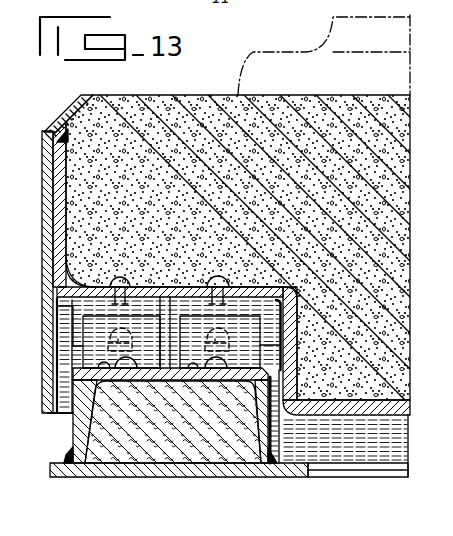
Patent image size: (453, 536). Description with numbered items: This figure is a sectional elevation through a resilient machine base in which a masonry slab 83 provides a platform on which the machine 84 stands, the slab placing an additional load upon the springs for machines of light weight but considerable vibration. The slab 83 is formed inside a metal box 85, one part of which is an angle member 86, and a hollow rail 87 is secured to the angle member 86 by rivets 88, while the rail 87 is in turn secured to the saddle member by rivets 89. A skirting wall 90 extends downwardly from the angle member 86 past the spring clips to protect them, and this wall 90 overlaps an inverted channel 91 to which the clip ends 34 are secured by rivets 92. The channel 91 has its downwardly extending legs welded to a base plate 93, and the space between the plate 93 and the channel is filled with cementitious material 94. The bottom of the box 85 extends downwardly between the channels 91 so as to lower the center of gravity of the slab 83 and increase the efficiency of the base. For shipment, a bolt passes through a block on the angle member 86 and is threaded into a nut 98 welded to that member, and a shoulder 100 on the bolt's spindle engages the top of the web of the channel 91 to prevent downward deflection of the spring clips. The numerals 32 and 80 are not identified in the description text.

The masonry slab 83 is at (200, 108).
The machine 84 is at (284, 58).
The metal box 85 is at (408, 414).
The angle member 86 is at (52, 281).
The hollow rail 87 is at (80, 322).
The rivets 88 is at (75, 257).
The rivets 89 is at (82, 354).
The anchor bolts 32 is at (96, 325).
The rivets 92 is at (82, 361).
The skirting wall 90 is at (58, 388).
The clip ends 34 is at (57, 403).
The inverted channel 91 is at (80, 431).
The cementitious material 94 is at (110, 463).
The base plate 93 is at (168, 473).
The slab 80 is at (445, 244).
The nut 98 is at (444, 323).
The shoulder 100 is at (443, 351).